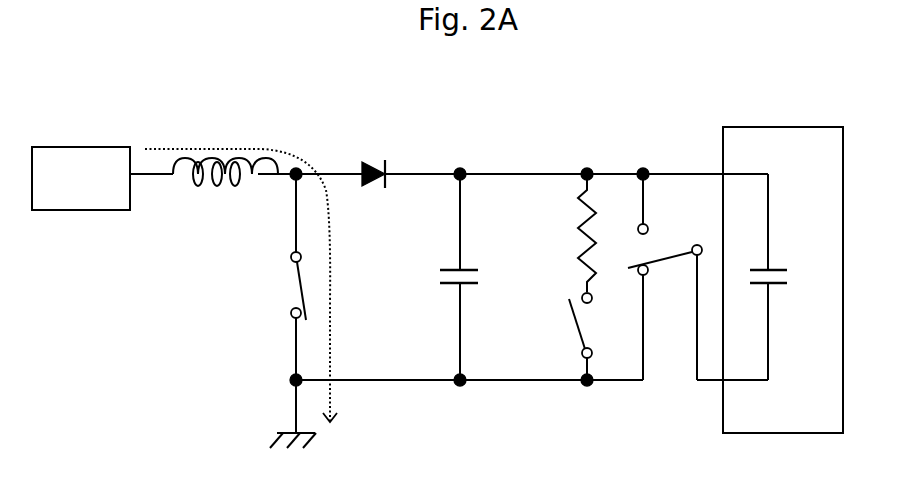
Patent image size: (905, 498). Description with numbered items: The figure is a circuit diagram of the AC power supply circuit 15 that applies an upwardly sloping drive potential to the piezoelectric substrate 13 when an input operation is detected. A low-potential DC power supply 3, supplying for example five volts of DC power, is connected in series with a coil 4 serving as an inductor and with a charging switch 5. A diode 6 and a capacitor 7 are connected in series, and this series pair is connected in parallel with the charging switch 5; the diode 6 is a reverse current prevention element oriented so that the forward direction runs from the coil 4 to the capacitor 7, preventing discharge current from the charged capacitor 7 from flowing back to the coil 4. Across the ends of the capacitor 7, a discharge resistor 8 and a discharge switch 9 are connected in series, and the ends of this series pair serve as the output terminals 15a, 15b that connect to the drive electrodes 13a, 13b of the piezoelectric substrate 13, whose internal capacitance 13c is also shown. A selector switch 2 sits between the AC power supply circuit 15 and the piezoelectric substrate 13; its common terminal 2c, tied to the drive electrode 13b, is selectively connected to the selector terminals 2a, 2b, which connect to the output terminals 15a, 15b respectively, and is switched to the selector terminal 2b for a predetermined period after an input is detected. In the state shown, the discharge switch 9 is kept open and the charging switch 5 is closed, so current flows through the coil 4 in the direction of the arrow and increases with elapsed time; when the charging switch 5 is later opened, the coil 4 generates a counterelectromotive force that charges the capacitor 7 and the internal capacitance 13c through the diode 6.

The selector switch 2 is at (653, 277).
The selector terminal 2a is at (626, 206).
The selector terminal 2b is at (648, 316).
The common terminal 2c is at (683, 274).
The low-potential DC power supply 3 is at (102, 147).
The coil 4 is at (199, 183).
The charging switch 5 is at (283, 285).
The diode 6 is at (374, 162).
The capacitor 7 is at (451, 277).
The discharge resistor 8 is at (571, 231).
The discharge switch 9 is at (570, 322).
The piezoelectric substrate 13 is at (783, 280).
The drive electrode 13a is at (751, 159).
The drive electrode 13b is at (751, 398).
The internal capacitance 13c is at (819, 363).
The AC power supply circuit 15 is at (200, 338).
The output terminal 15a is at (588, 168).
The output terminal 15b is at (590, 384).